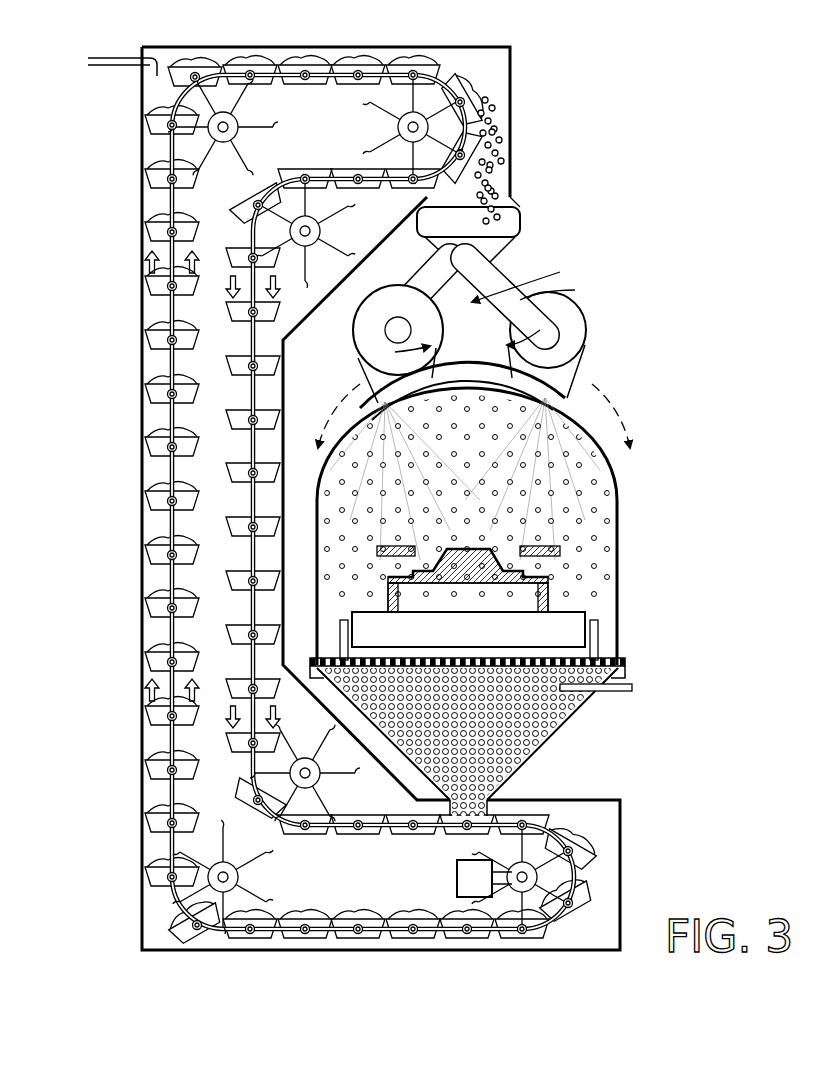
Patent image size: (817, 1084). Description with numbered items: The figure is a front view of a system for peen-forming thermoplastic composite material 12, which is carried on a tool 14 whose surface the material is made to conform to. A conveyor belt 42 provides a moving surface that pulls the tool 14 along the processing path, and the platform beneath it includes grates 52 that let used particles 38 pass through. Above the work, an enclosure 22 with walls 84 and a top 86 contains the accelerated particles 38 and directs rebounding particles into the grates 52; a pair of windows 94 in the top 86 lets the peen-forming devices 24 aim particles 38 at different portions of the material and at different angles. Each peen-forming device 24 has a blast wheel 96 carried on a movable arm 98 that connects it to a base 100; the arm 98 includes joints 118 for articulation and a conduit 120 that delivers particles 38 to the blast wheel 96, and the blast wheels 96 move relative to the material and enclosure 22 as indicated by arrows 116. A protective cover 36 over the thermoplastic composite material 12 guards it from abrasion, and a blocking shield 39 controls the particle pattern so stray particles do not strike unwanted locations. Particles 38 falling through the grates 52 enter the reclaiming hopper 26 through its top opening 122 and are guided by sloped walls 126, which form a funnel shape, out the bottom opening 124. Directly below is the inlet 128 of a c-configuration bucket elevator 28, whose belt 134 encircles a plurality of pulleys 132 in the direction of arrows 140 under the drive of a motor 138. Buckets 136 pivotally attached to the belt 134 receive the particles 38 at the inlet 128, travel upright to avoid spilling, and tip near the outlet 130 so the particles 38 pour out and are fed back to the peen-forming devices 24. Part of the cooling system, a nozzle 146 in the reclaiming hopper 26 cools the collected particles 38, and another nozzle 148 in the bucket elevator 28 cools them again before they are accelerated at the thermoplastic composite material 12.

The thermoplastic composite material 12 is at (548, 576).
The tool 14 is at (560, 597).
The enclosure 22 is at (621, 502).
The peen-forming device 24 is at (565, 228).
The reclaiming hopper 26 is at (560, 770).
The bucket elevator 28 is at (128, 183).
The protective cover 36 is at (548, 527).
The particles 38 is at (488, 172).
The blocking shield 39 is at (565, 548).
The conveyor belt 42 is at (575, 622).
The grates 52 is at (605, 684).
The walls 84 is at (318, 514).
The top 86 is at (622, 458).
The windows 94 is at (494, 384).
The blast wheel 96 is at (358, 332).
The movable arm 98 is at (540, 296).
The base 100 is at (520, 246).
The arrows 116 is at (352, 384).
The joints 118 is at (437, 257).
The conduit 120 is at (515, 283).
The top opening 122 is at (618, 660).
The bottom opening 124 is at (490, 799).
The sloped walls 126 is at (595, 720).
The inlet 128 is at (583, 851).
The outlet 130 is at (505, 200).
The pulleys 132 is at (240, 124).
The belt 134 is at (150, 421).
The buckets 136 is at (148, 396).
The motor 138 is at (455, 880).
The arrows 140 is at (147, 266).
The nozzle 146 is at (622, 691).
The nozzle 148 is at (112, 66).